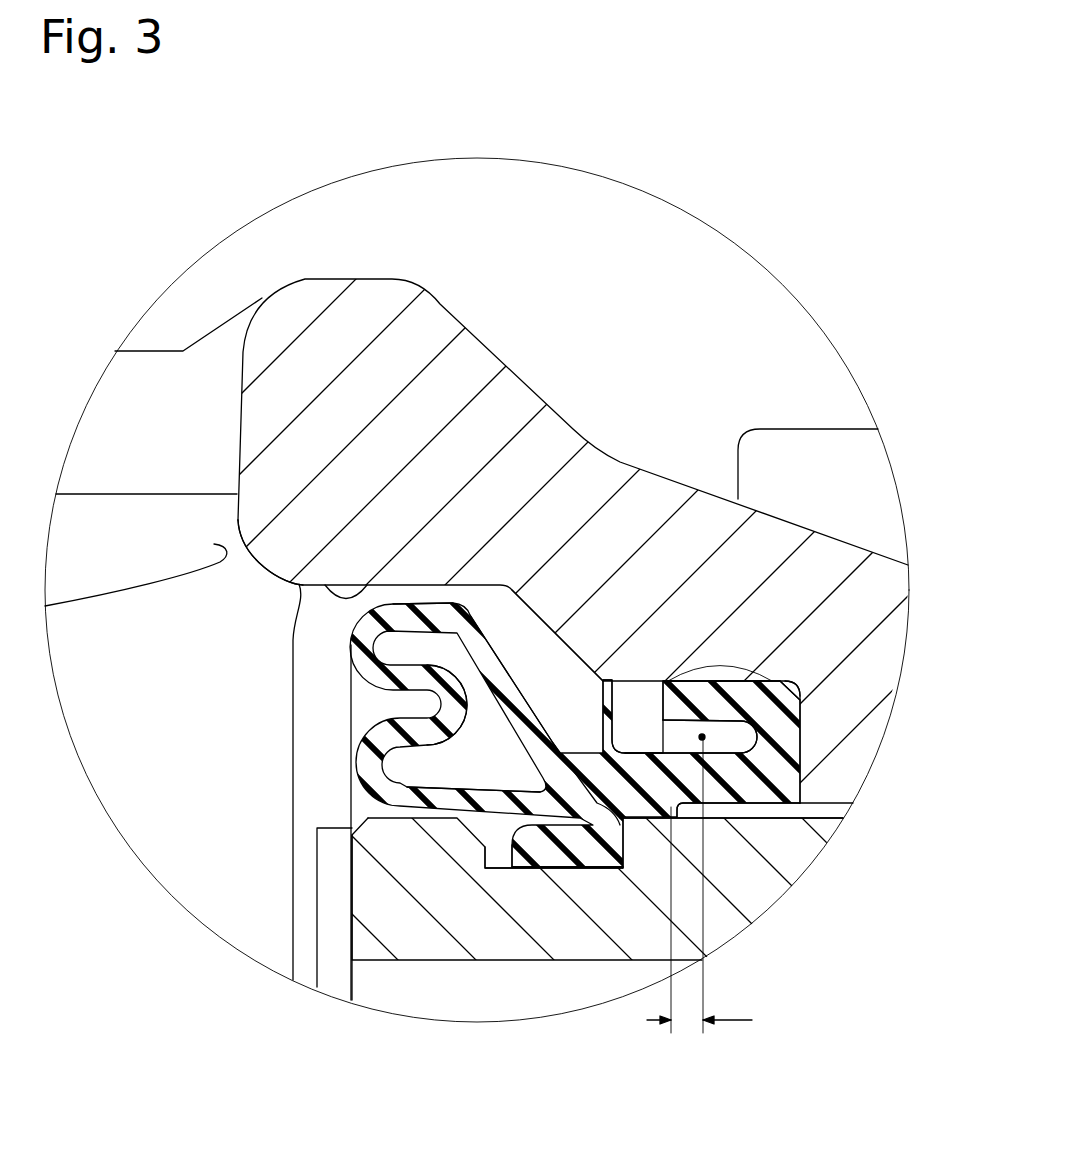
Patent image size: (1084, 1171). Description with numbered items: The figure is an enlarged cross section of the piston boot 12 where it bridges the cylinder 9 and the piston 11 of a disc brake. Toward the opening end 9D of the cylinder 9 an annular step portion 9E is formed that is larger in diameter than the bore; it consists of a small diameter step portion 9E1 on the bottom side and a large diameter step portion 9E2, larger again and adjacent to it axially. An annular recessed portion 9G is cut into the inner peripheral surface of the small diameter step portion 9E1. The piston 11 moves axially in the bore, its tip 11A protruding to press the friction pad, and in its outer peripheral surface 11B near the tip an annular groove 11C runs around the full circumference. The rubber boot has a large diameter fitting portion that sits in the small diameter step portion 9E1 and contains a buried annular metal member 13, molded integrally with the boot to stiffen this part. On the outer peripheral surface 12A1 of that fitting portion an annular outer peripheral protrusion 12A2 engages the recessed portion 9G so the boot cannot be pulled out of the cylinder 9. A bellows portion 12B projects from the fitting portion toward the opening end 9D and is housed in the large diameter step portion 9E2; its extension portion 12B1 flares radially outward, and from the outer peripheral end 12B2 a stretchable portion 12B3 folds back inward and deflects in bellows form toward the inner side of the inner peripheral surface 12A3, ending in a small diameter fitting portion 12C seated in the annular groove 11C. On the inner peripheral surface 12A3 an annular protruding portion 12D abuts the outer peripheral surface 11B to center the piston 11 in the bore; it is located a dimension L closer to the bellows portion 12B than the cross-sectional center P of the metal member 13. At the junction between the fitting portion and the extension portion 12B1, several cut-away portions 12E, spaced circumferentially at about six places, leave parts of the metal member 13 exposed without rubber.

The cylinder 9 is at (393, 373).
The opening end 9D is at (298, 680).
The step portion 9E is at (550, 667).
The small diameter step portion 9E1 is at (760, 803).
The large diameter step portion 9E2 is at (303, 592).
The recessed portion 9G is at (746, 690).
The piston 11 is at (402, 905).
The tip 11A is at (352, 917).
The outer peripheral surface 11B is at (807, 817).
The annular groove 11C is at (507, 873).
The piston boot 12 is at (588, 866).
The outer peripheral surface 12A1 is at (790, 700).
The outer peripheral protrusion 12A2 is at (684, 700).
The inner peripheral surface 12A3 is at (743, 803).
The bellows portion 12B is at (365, 755).
The extension portion 12B1 is at (503, 680).
The outer peripheral end 12B2 is at (438, 600).
The stretchable portion 12B3 is at (450, 702).
The small diameter fitting portion 12C is at (543, 853).
The annular protruding portion 12D is at (630, 815).
The cut-away portion 12E is at (632, 690).
The metal member 13 is at (724, 803).
The cross-sectional center P is at (702, 735).
The dimension L is at (699, 885).